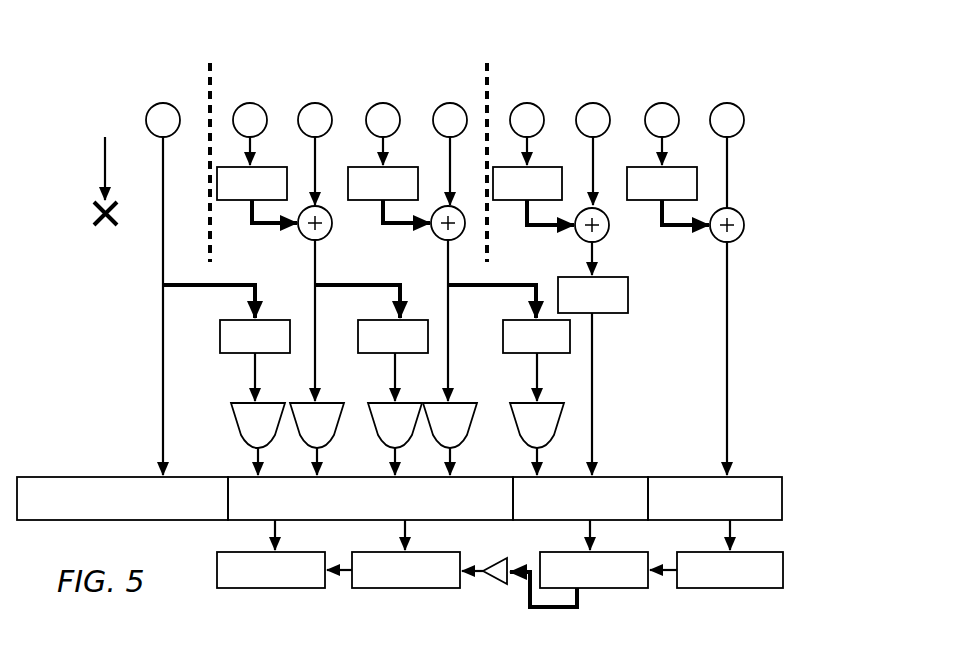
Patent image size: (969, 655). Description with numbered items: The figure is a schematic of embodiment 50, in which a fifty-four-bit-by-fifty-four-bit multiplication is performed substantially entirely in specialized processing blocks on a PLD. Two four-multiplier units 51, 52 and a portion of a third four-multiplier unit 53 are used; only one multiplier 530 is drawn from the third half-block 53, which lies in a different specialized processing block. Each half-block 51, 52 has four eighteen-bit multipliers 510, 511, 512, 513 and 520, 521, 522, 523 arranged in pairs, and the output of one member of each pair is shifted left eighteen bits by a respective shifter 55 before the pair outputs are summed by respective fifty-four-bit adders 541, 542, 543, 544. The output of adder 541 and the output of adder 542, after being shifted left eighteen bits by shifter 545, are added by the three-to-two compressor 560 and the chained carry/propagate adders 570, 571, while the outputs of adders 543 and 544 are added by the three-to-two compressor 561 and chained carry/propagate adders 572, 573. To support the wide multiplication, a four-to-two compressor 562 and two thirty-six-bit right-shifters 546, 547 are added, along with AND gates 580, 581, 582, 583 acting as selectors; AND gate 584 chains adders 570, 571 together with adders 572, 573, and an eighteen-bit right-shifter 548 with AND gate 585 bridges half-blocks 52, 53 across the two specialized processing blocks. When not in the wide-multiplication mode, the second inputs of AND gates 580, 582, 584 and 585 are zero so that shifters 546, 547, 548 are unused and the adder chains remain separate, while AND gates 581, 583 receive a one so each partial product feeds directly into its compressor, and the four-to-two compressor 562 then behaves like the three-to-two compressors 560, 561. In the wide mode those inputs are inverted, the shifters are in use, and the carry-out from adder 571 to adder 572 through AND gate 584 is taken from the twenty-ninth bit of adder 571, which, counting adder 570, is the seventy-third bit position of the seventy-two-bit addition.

The embodiment 50 is at (818, 138).
The four-multiplier unit 51 is at (605, 66).
The four-multiplier unit 52 is at (347, 68).
The third four-multiplier unit 53 is at (122, 78).
The shifter 55 is at (290, 175).
The 18-bit-by-18-bit multiplier 510 is at (727, 104).
The 18-bit-by-18-bit multiplier 511 is at (660, 104).
The 18-bit-by-18-bit multiplier 512 is at (597, 104).
The 18-bit-by-18-bit multiplier 513 is at (530, 104).
The 18-bit-by-18-bit multiplier 520 is at (440, 104).
The 18-bit-by-18-bit multiplier 521 is at (372, 105).
The 18-bit-by-18-bit multiplier 522 is at (310, 104).
The 18-bit-by-18-bit multiplier 523 is at (237, 105).
The multiplier 530 is at (175, 107).
The 54-bit adder 541 is at (745, 234).
The 54-bit adder 542 is at (610, 234).
The 54-bit adder 543 is at (435, 237).
The 54-bit adder 544 is at (302, 235).
The shifter 545 is at (629, 292).
The 36-bit right-shifter 546 is at (504, 328).
The 36-bit right-shifter 547 is at (372, 322).
The 18-bit right-shifter 548 is at (221, 325).
The 3:2 compressor 560 is at (86, 477).
The 3:2 compressor 561 is at (345, 477).
The 4:2 compressor 562 is at (625, 477).
The carry/propagate adder 570 is at (745, 588).
The carry/propagate adder 571 is at (605, 588).
The carry/propagate adder 572 is at (392, 588).
The carry/propagate adder 573 is at (258, 588).
The AND gate 580 is at (547, 402).
The AND gate 581 is at (462, 402).
The AND gate 582 is at (397, 402).
The AND gate 583 is at (318, 402).
The AND gate 584 is at (491, 585).
The AND gate 585 is at (236, 402).